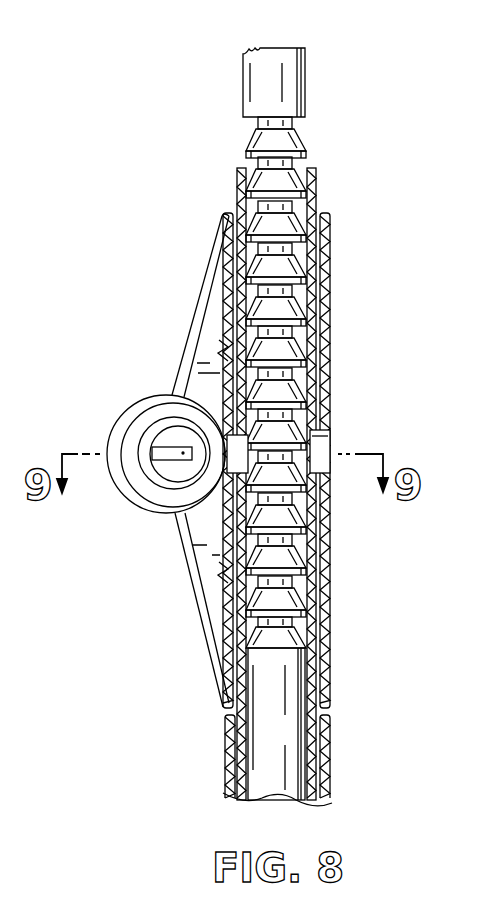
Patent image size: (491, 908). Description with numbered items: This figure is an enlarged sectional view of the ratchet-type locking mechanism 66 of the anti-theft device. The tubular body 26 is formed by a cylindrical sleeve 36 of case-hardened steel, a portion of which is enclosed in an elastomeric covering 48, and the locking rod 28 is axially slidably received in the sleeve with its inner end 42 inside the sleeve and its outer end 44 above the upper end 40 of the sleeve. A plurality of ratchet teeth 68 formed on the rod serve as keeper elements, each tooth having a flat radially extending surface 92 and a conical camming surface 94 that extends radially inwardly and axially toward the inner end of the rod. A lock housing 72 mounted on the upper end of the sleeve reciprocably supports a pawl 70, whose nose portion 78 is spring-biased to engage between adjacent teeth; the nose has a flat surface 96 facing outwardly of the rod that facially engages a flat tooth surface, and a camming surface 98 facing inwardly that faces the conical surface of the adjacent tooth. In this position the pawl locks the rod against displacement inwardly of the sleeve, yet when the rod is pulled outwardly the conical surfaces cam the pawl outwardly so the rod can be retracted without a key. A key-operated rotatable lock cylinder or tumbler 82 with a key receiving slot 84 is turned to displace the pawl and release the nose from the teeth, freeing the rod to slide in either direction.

The tubular body 26 is at (213, 743).
The locking rod 28 is at (230, 71).
The cylindrical sleeve 36 is at (332, 651).
The upper end of sleeve 40 is at (238, 200).
The inner end of locking rod 42 is at (290, 775).
The outer end of locking rod 44 is at (301, 76).
The covering 48 is at (322, 733).
The ratchet-type locking mechanism 66 is at (146, 266).
The ratchet teeth 68 is at (318, 145).
The pawl 70 is at (217, 468).
The lock housing 72 is at (181, 333).
The nose portion 78 is at (217, 503).
The lock cylinder or tumbler 82 is at (147, 417).
The key receiving slot 84 is at (162, 456).
The flat radially extending surface 92 is at (318, 214).
The conical camming surface 94 is at (328, 169).
The flat surface of nose 96 is at (245, 446).
The camming surface of nose 98 is at (252, 458).